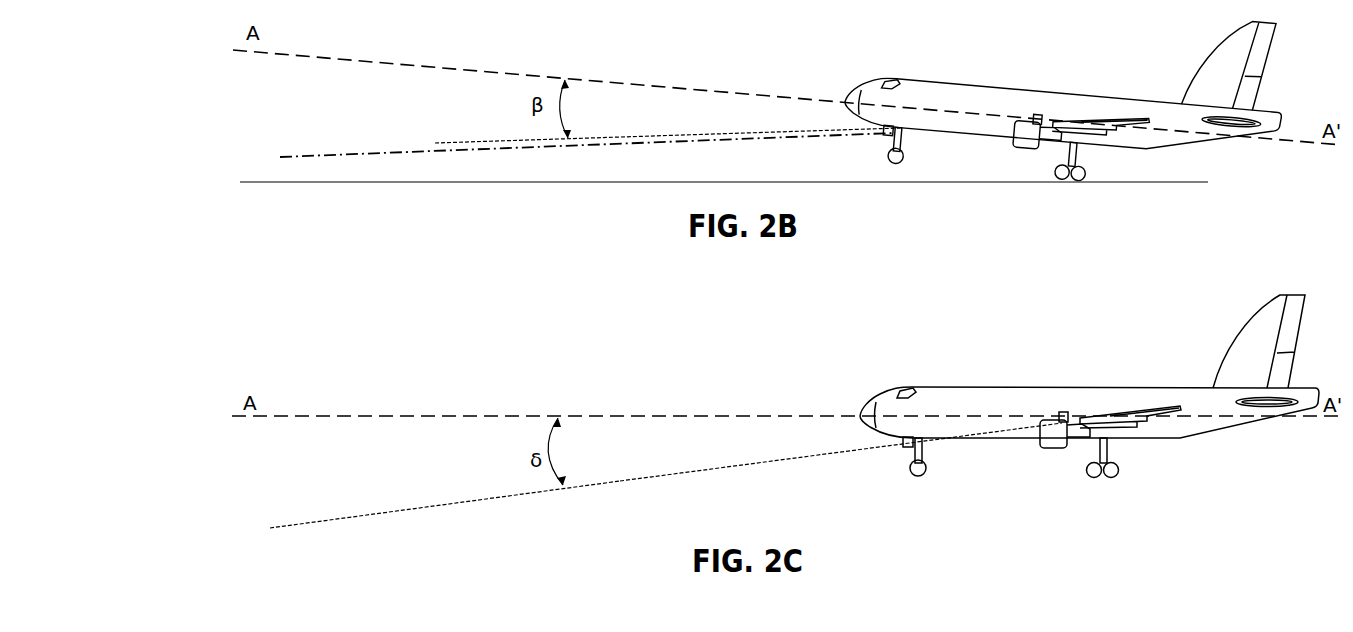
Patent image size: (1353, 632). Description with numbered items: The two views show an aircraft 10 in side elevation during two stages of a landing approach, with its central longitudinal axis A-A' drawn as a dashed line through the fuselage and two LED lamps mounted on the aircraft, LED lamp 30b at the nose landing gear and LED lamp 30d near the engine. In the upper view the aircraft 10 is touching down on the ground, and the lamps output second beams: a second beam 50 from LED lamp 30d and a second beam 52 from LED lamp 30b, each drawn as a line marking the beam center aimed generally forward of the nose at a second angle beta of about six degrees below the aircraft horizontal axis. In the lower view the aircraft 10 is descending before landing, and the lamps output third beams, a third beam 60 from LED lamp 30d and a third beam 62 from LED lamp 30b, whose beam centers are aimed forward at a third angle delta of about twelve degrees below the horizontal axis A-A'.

In FIG. 2B, the aircraft 10 is at (962, 90).
In FIG. 2C, the aircraft 10 is at (967, 392).
In FIG. 2B, the LED lamp 30b is at (886, 142).
In FIG. 2C, the LED lamp 30b is at (907, 450).
In FIG. 2B, the LED lamp 30d is at (1045, 117).
In FIG. 2C, the LED lamp 30d is at (1063, 412).
In FIG. 2B, the second beam 50 is at (508, 140).
In FIG. 2B, the second beam 52 is at (480, 155).
In FIG. 2C, the third beam 60 is at (733, 460).
In FIG. 2C, the third beam 62 is at (493, 497).